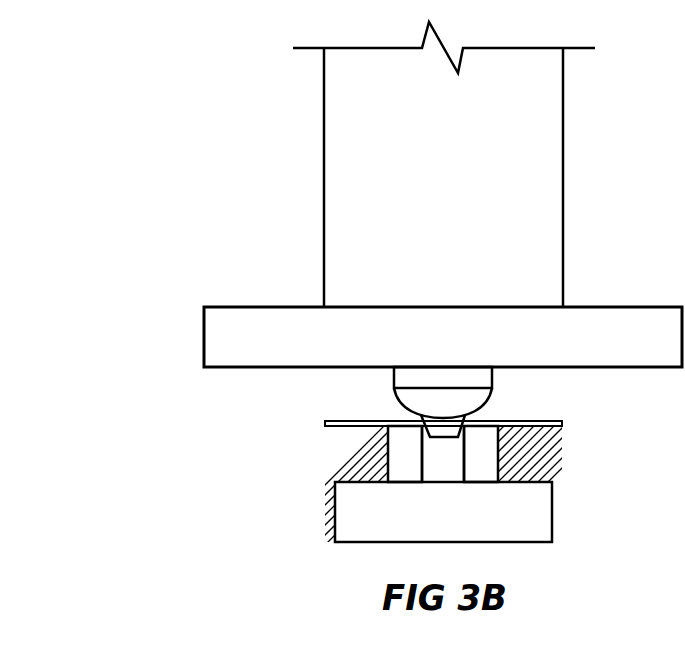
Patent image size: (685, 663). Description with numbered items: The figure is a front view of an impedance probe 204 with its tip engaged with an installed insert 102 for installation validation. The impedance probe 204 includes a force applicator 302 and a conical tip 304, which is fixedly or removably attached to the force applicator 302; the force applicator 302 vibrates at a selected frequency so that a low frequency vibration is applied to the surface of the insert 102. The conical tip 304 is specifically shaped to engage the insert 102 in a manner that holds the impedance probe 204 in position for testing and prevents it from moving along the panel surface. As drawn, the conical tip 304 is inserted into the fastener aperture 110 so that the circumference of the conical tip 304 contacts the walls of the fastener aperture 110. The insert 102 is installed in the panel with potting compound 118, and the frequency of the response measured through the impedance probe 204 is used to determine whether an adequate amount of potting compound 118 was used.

The impedance probe 204 is at (542, 122).
The force applicator 302 is at (487, 395).
The conical tip 304 is at (424, 418).
The potting compound 118 is at (345, 458).
The fastener aperture 110 is at (460, 466).
The insert 102 is at (463, 524).